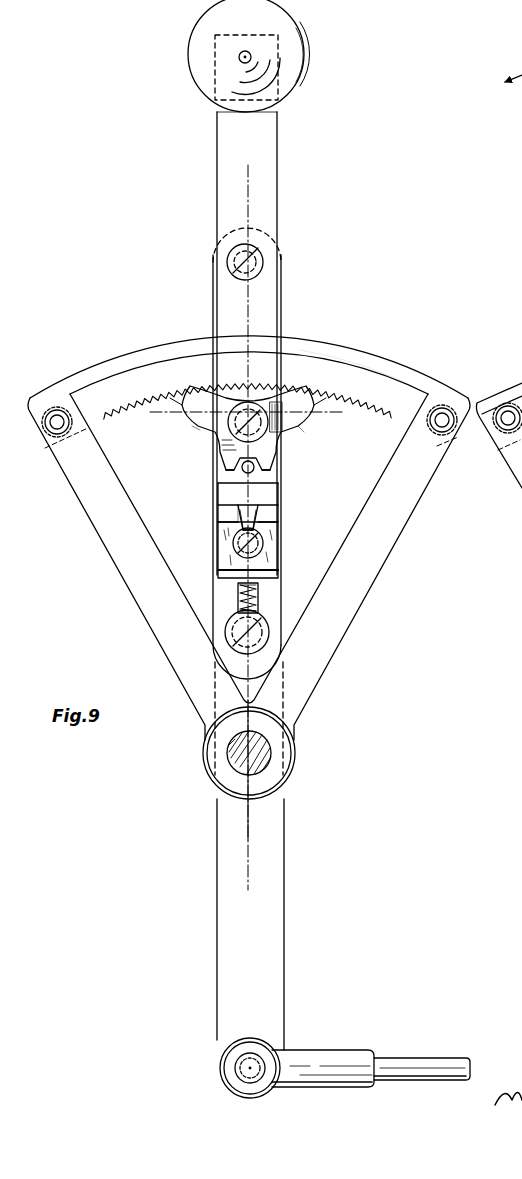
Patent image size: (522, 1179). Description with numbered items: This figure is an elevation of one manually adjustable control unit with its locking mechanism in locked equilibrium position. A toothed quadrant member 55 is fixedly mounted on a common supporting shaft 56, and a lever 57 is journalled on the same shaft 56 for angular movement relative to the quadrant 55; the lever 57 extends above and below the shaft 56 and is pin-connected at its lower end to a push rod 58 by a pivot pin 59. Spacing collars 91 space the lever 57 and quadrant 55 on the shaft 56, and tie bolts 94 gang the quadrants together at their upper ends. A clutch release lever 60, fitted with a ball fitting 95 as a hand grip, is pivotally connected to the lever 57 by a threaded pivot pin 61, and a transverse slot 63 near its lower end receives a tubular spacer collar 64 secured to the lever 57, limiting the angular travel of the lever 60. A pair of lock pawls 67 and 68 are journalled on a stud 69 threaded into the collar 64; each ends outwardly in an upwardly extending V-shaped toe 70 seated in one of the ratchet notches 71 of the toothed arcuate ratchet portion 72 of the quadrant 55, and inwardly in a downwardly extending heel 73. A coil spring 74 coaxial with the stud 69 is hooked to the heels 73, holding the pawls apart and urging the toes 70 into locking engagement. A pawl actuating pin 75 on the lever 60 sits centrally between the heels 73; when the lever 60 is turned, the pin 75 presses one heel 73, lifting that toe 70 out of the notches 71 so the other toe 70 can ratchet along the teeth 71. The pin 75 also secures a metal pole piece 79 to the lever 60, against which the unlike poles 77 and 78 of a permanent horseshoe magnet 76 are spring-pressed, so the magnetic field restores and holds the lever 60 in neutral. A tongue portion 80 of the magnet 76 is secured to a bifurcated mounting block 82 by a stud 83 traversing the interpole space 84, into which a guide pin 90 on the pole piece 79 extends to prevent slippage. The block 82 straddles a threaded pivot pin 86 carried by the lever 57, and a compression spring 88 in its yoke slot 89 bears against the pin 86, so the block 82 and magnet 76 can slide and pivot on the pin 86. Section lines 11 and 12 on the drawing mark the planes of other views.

The ball fitting 95 is at (305, 59).
The clutch release lever 60 is at (278, 140).
The section line 11- 11 is at (265, 178).
The threaded pivot pin 61 is at (264, 265).
The lever 57 is at (282, 293).
The toothed quadrant member 55 is at (96, 362).
The transverse slot 63 is at (208, 362).
The tubular spacer collar 64 is at (284, 352).
The toothed arcuate ratchet portion 72 is at (388, 386).
The V-shaped toe 70 is at (192, 390).
The section line 12- 12 is at (163, 410).
The ratchet notches 71 is at (373, 412).
The tie bolts 94 is at (56, 432).
The lock pawl 67 is at (194, 430).
The lock pawl 68 is at (302, 430).
The stud 69 is at (214, 442).
The coil spring 74 is at (226, 460).
The heel 73 is at (222, 480).
The metal pole piece 79 is at (272, 496).
The pole 78 is at (272, 513).
The pawl actuating pin 75 is at (224, 501).
The interpole space 84 is at (238, 521).
The pole 77 is at (222, 516).
The guide pin 90 is at (259, 522).
The permanent horseshoe magnet 76 is at (222, 545).
The stud 83 is at (263, 543).
The tongue portion 80 is at (275, 566).
The bifurcated mounting block 82 is at (222, 582).
The spring 88 is at (238, 598).
The yoke slot 89 is at (258, 600).
The threaded pivot pin 86 is at (245, 650).
The spacing collars 91 is at (293, 752).
The supporting shaft 56 is at (232, 757).
The push rod 58 is at (406, 1060).
The pivot pin 59 is at (236, 1068).